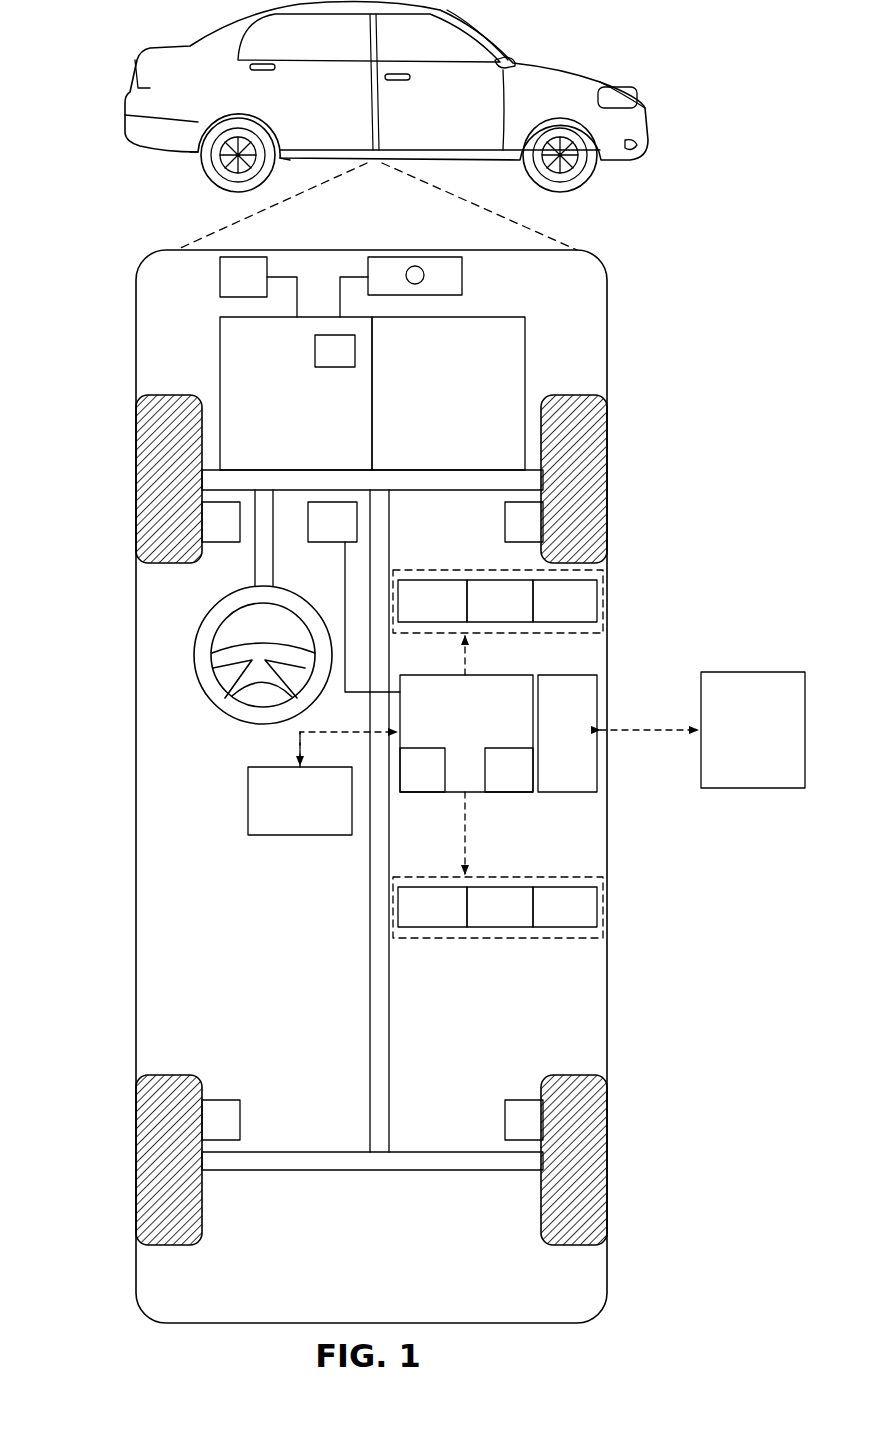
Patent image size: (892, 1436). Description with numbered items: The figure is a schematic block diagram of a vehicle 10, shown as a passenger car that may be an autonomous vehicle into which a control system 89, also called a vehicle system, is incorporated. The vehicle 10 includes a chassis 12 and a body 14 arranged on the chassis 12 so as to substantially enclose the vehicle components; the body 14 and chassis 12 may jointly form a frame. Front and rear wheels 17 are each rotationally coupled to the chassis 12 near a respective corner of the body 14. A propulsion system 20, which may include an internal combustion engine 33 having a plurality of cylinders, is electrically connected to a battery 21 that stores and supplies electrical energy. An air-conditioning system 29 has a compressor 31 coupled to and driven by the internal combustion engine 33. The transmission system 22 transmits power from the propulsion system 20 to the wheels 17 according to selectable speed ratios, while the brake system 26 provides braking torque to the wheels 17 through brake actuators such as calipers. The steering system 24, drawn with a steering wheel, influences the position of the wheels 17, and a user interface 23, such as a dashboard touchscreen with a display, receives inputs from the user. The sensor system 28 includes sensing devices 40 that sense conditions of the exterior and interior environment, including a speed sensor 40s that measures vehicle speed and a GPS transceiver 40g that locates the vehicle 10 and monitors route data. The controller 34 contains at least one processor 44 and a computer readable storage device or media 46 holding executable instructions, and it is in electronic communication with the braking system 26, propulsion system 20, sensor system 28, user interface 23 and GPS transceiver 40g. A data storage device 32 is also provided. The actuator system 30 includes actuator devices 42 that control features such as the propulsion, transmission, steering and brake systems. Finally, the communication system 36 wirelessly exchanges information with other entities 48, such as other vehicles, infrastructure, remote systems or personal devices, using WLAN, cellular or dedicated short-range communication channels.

The vehicle 10 is at (135, 80).
The control system 89 is at (640, 264).
The body 14 is at (136, 862).
The chassis 12 is at (370, 1010).
The wheels 17 is at (170, 395).
The battery 21 is at (228, 257).
The air-conditioning system 29 is at (415, 257).
The compressor 31 is at (424, 277).
The internal combustion engine 33 is at (315, 350).
The propulsion system 20 is at (281, 406).
The transmission system 22 is at (434, 406).
The brake system 26 is at (206, 534).
The user interface 23 is at (318, 534).
The steering system 24 is at (285, 561).
The sensor system 28 is at (477, 570).
The sensing devices 40 is at (418, 614).
The speed sensor 40s is at (480, 614).
The GPS transceiver 40g is at (545, 614).
The controller 34 is at (452, 722).
The communication system 36 is at (553, 746).
The processor 44 is at (408, 782).
The computer readable storage device or media 46 is at (494, 782).
The data storage device 32 is at (285, 814).
The actuator system 30 is at (535, 938).
The actuator devices 42 is at (418, 920).
The other entities 48 is at (738, 742).